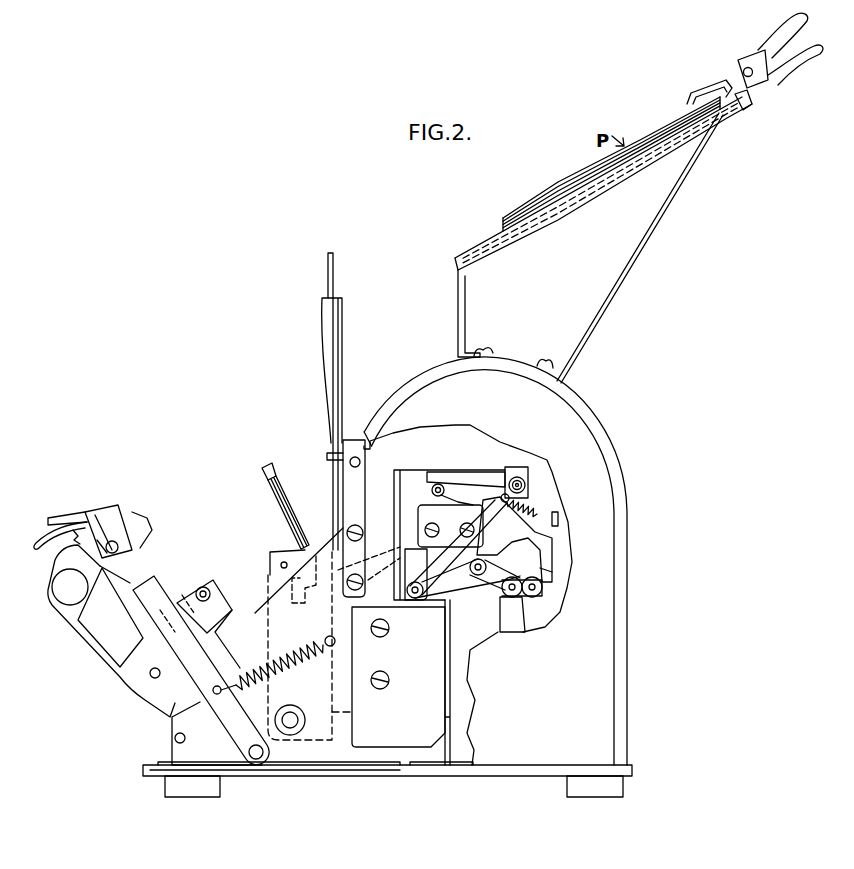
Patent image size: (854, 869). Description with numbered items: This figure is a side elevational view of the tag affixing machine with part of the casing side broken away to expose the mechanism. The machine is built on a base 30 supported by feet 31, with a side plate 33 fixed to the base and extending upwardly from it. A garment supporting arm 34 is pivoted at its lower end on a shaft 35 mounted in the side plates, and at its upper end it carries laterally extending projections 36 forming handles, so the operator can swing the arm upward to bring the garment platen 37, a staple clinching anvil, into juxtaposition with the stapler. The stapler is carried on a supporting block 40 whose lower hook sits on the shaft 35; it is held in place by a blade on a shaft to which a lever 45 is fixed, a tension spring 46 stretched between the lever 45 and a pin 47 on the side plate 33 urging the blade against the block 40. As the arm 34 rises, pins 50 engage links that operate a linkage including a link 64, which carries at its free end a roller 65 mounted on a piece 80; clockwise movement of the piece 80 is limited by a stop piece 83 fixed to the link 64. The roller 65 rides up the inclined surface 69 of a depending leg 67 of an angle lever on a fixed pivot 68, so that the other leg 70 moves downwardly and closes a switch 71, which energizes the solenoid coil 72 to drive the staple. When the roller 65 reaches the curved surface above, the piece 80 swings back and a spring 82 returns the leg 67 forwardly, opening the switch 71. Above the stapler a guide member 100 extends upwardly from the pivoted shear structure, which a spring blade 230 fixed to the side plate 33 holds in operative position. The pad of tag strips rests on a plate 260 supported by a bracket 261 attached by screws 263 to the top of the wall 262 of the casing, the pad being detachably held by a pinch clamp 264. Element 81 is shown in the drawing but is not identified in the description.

The base 30 is at (430, 776).
The feet 31 is at (182, 797).
The side plate 33 is at (270, 600).
The garment supporting arm 34 is at (64, 624).
The shaft 35 is at (300, 727).
The laterally extending projections 36 is at (70, 587).
The garment platen 37 is at (150, 535).
The supporting block 40 is at (268, 576).
The lever 45 is at (160, 590).
The tension spring 46 is at (292, 670).
The pin 47 is at (325, 636).
The pins 50 is at (205, 586).
The link 64 is at (442, 581).
The roller 65 is at (542, 592).
The depending leg 67 is at (540, 548).
The fixed pivot 68 is at (524, 482).
The inclined surface 69 is at (547, 573).
The leg 70 is at (464, 476).
The switch 71 is at (455, 526).
The solenoid coil 72 is at (453, 631).
The piece 80 is at (525, 571).
The block 81 is at (512, 600).
The spring 82 is at (542, 508).
The stop piece 83 is at (488, 564).
The guide member 100 is at (331, 404).
The spring blade 230 is at (340, 489).
The plate 260 is at (556, 214).
The bracket 261 is at (466, 302).
The wall 262 is at (442, 370).
The screws 263 is at (489, 348).
The pinch clamp 264 is at (734, 72).